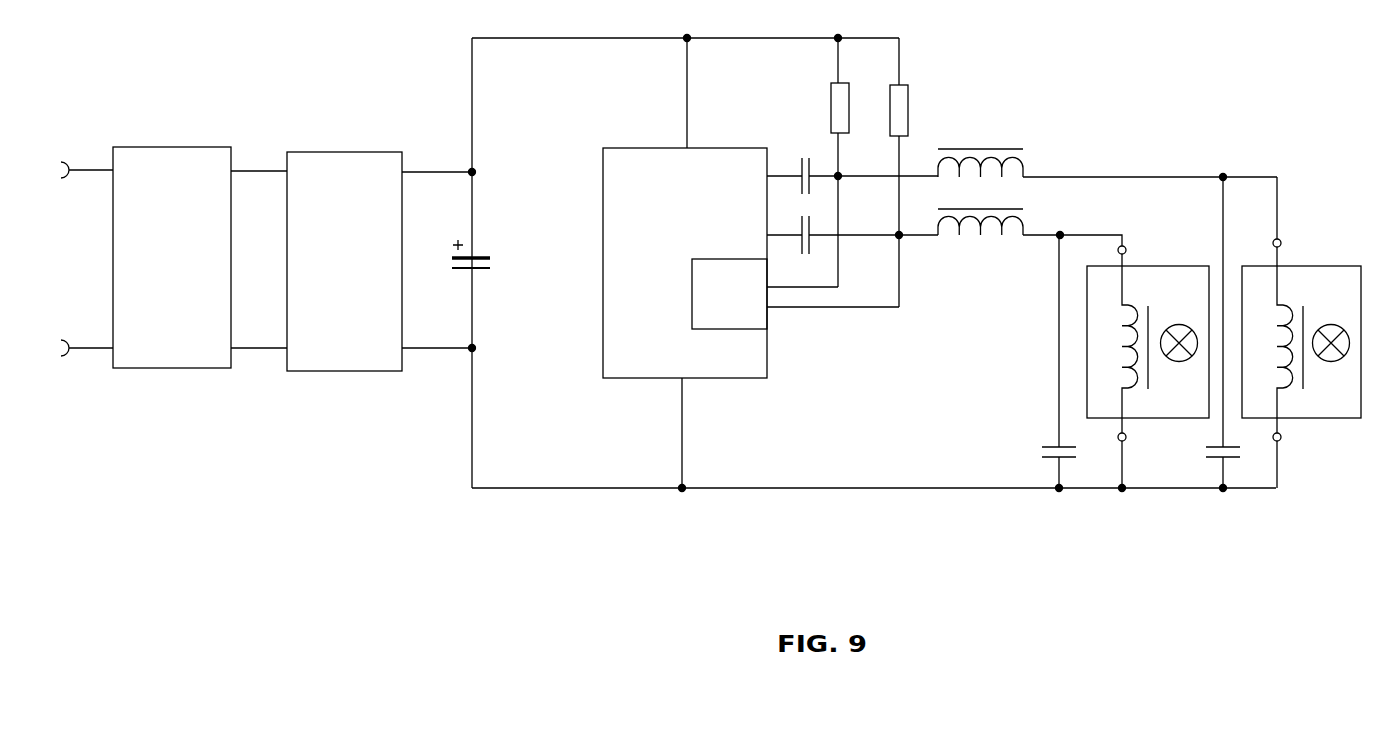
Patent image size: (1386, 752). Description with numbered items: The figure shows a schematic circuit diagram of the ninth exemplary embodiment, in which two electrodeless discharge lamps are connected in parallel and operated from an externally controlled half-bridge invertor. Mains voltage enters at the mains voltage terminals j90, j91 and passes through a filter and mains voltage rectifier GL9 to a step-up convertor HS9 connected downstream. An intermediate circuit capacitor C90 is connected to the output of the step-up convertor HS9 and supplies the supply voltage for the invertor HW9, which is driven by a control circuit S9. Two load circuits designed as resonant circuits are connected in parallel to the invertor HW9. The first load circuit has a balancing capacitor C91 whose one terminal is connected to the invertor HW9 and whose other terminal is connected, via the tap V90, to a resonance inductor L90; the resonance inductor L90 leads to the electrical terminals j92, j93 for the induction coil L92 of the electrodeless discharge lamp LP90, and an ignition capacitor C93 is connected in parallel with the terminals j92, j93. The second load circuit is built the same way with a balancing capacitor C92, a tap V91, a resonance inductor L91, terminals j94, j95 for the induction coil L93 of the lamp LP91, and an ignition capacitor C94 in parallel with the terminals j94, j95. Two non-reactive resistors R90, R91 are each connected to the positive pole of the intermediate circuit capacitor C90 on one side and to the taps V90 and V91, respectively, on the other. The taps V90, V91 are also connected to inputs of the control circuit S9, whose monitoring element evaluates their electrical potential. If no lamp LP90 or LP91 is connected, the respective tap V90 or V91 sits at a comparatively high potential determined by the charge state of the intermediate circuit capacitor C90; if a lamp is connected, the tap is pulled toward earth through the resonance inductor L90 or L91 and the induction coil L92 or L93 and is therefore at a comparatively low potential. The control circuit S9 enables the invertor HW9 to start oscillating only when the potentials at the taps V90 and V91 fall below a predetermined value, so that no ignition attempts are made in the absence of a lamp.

The mains voltage terminal j90 is at (82, 153).
The mains voltage terminal j91 is at (78, 361).
The mains voltage rectifier GL9 is at (172, 257).
The step-up convertor HS9 is at (344, 261).
The intermediate circuit capacitor C90 is at (494, 271).
The invertor HW9 is at (685, 263).
The control circuit S9 is at (795, 294).
The balancing capacitor C91 is at (804, 162).
The balancing capacitor C92 is at (833, 249).
The non-reactive resistor R90 is at (818, 162).
The non-reactive resistor R91 is at (926, 172).
The tap V90 is at (888, 161).
The tap V91 is at (923, 249).
The resonance inductor L90 is at (1107, 153).
The resonance inductor L91 is at (1030, 214).
The induction coil L92 is at (1128, 393).
The induction coil L93 is at (1289, 390).
The electrical terminal j92 is at (1106, 249).
The electrical terminal j93 is at (1104, 455).
The electrical terminal j94 is at (1259, 212).
The electrical terminal j95 is at (1297, 456).
The electrodeless discharge lamp LP90 is at (1151, 327).
The electrodeless discharge lamp LP91 is at (1304, 327).
The ignition capacitor C93 is at (1044, 361).
The ignition capacitor C94 is at (1209, 332).